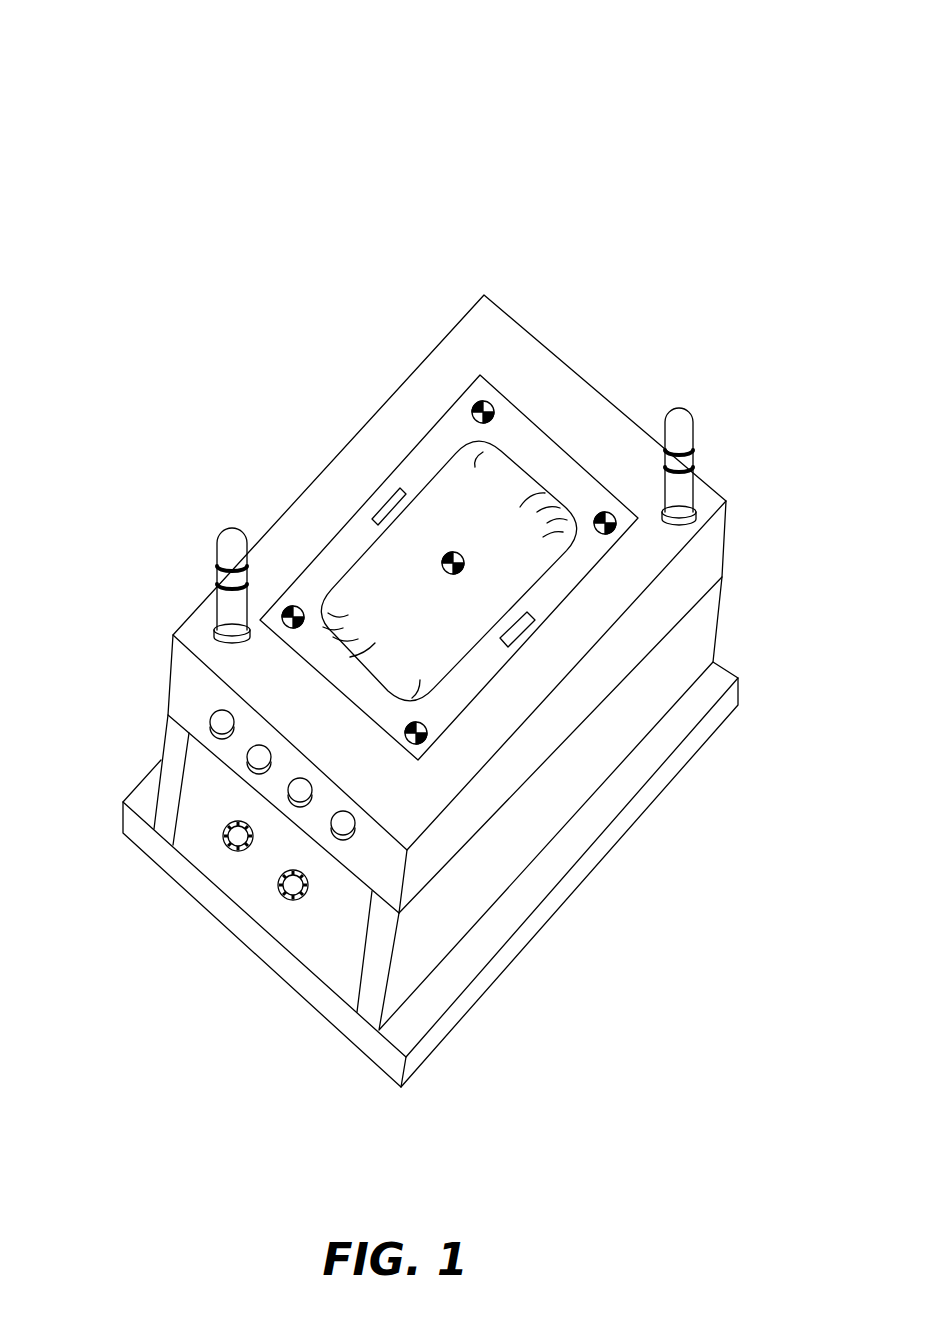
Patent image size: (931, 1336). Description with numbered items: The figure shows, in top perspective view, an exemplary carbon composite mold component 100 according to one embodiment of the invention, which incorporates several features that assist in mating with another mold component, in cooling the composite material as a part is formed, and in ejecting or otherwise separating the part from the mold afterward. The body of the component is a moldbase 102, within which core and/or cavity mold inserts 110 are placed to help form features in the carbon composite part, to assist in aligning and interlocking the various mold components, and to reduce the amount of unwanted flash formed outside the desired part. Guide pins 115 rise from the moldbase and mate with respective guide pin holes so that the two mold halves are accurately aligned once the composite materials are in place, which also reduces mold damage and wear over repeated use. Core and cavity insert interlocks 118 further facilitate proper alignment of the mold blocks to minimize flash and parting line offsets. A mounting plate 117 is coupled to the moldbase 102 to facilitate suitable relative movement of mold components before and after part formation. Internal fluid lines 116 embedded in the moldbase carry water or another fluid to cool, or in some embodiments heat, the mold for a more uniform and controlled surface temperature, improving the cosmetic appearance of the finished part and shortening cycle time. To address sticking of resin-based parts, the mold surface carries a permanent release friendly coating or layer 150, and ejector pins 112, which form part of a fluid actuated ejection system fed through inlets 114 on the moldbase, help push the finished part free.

The carbon composite mold component 100 is at (167, 91).
The moldbase 102 is at (488, 337).
The core and/or cavity mold inserts 110 is at (333, 558).
The ejector pins 112 is at (310, 610).
The inlets 114 is at (238, 842).
The guide pins 115 is at (686, 428).
The internal fluid lines 116 is at (345, 827).
The mounting plates 117 is at (145, 832).
The core and cavity insert interlocks 118 is at (383, 510).
The permanent release friendly coating or layer 150 is at (490, 520).